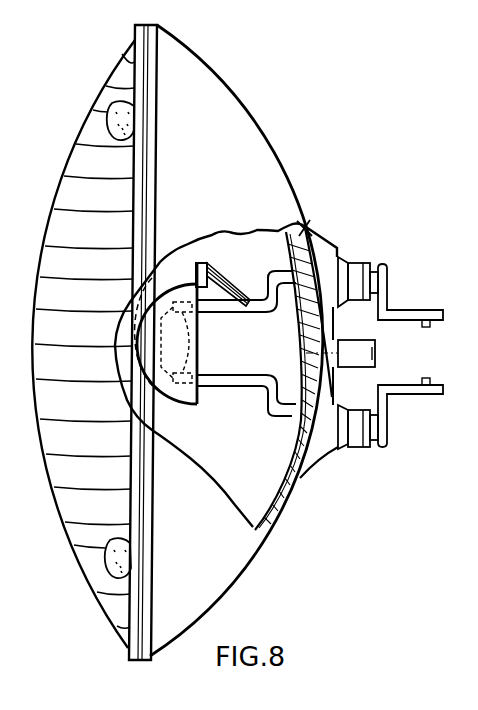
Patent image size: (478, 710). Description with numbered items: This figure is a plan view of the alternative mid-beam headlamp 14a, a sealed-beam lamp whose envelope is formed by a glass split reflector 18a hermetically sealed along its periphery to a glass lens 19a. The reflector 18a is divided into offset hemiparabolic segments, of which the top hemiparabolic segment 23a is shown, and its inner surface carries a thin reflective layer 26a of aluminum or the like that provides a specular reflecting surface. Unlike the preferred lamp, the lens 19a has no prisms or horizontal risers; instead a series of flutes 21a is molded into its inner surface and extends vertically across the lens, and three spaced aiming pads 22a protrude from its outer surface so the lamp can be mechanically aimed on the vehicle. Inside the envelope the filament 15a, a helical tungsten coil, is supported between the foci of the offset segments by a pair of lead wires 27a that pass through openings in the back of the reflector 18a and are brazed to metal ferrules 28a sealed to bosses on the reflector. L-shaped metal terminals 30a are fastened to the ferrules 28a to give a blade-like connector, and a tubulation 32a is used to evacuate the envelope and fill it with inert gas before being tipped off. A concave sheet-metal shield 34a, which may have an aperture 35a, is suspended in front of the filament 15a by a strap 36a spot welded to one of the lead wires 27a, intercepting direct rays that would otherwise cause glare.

The mid-beam headlamp 14a is at (290, 99).
The filament 15a is at (183, 342).
The split reflector 18a is at (263, 140).
The lens 19a is at (88, 583).
The flutes 21a is at (76, 508).
The aiming pads 22a is at (128, 117).
The hemiparabolic segment 23a is at (306, 228).
The reflective layer 26a is at (273, 483).
The lead wires 27a is at (223, 314).
The metal ferrules 28a is at (358, 272).
The L-shaped metal terminals 30a is at (390, 308).
The tubulation 32a is at (375, 353).
The shield 34a is at (184, 407).
The aperture 35a is at (152, 279).
The strap 36a is at (232, 268).